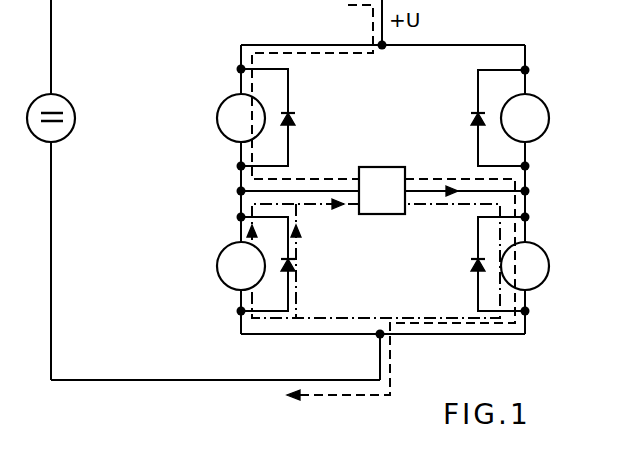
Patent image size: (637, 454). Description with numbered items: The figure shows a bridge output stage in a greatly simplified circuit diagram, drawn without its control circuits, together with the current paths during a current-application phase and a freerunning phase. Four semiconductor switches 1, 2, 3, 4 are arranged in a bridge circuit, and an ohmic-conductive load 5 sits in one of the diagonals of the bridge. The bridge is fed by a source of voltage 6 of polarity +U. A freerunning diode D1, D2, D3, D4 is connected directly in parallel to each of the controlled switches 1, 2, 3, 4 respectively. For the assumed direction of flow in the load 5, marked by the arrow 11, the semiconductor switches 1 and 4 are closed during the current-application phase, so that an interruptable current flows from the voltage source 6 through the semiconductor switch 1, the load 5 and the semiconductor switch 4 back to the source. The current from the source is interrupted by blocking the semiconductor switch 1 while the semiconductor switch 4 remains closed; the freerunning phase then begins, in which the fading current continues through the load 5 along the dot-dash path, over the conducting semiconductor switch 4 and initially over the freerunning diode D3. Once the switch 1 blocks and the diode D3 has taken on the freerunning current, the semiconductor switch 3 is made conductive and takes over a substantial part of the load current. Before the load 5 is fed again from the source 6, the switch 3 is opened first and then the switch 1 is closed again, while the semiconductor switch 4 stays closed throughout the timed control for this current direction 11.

The semiconductor switch 1 is at (234, 132).
The semiconductor switch 2 is at (518, 132).
The semiconductor switch 3 is at (234, 280).
The semiconductor switch 4 is at (518, 280).
The ohmic-conductive load 5 is at (375, 204).
The source of voltage 6 is at (70, 122).
The arrow 11 is at (448, 203).
The freerunning diode D1 is at (295, 119).
The freerunning diode D2 is at (471, 119).
The freerunning diode D3 is at (295, 265).
The freerunning diode D4 is at (470, 266).